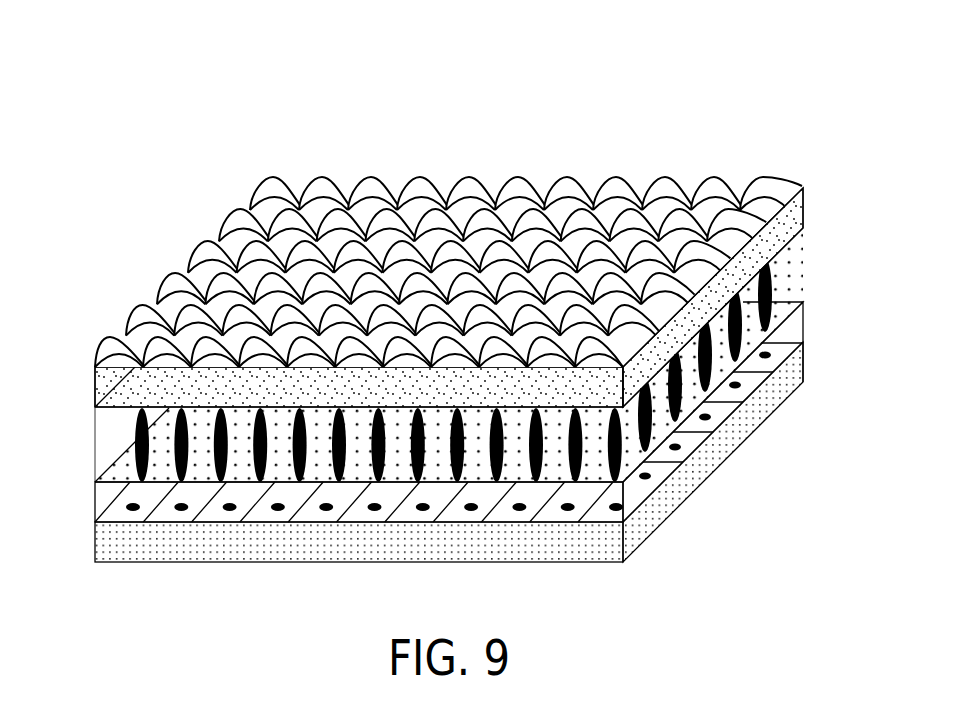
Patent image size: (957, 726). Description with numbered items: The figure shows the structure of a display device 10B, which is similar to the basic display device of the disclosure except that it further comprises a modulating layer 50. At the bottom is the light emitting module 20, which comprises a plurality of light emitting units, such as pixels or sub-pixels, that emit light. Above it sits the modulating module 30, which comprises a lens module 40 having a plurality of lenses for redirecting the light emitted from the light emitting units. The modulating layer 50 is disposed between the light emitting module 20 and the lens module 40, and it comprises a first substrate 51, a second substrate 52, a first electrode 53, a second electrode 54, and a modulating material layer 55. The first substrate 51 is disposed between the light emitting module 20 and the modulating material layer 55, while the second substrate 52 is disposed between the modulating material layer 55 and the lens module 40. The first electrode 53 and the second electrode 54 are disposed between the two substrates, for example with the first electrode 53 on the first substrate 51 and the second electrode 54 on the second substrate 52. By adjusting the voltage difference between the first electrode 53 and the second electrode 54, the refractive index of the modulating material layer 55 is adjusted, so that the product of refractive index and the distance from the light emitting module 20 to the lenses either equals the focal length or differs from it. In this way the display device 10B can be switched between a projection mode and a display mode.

The display device 10B is at (463, 293).
The light emitting module 20 is at (708, 453).
The modulating module 30 is at (463, 313).
The lens module 40 is at (483, 180).
The modulating layer 50 is at (466, 333).
The first substrate 51 is at (793, 327).
The second substrate 52 is at (803, 213).
The first electrode 53 is at (783, 302).
The second electrode 54 is at (787, 245).
The modulating material layer 55 is at (95, 449).